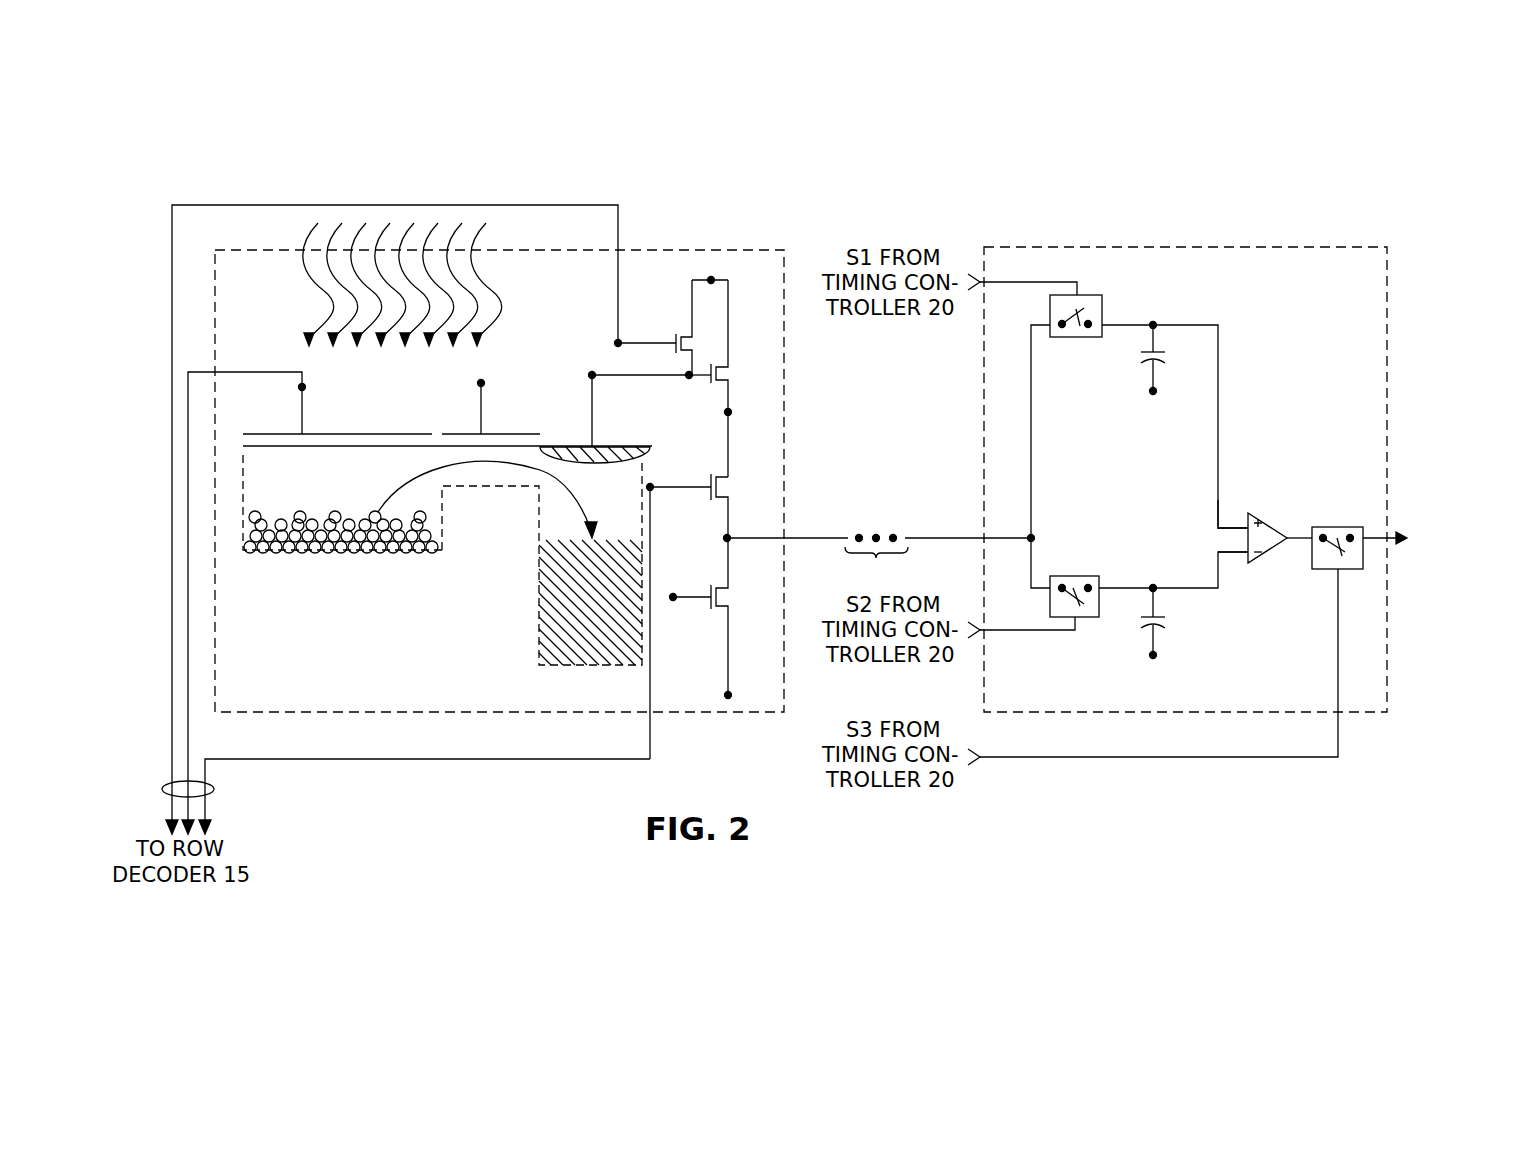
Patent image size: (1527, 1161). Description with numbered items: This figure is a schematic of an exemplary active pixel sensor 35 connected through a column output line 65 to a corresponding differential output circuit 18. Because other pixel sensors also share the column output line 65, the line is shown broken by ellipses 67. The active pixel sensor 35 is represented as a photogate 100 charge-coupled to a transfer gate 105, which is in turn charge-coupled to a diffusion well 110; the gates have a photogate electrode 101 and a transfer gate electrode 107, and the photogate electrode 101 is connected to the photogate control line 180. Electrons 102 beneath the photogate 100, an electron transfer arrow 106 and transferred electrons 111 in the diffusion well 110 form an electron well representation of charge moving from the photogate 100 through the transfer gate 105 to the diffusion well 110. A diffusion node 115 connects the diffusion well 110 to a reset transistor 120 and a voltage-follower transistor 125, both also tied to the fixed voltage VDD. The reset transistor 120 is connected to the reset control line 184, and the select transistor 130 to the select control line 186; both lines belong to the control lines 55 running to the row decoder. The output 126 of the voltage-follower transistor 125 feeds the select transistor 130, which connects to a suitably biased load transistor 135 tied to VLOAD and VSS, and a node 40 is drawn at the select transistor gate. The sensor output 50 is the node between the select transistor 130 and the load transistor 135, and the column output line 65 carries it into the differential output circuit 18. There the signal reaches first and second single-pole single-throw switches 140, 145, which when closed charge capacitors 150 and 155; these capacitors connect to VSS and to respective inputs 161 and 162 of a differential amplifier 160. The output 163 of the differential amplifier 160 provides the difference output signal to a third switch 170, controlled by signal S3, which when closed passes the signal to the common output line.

The reset control line 184 is at (392, 501).
The active pixel sensor 35 is at (652, 251).
The photogate electrode 101 is at (302, 387).
The photogate control line 180 is at (251, 373).
The photogate 100 is at (350, 428).
The transfer gate electrode 107 is at (478, 384).
The transfer gate 105 is at (514, 412).
The diffusion node 115 is at (590, 377).
The diffusion well 110 is at (610, 450).
The reset transistor 120 is at (670, 340).
The voltage-follower transistor 125 is at (710, 380).
The output of the voltage-follower transistor 126 is at (730, 414).
The electron transfer arrow 106 is at (400, 481).
The row select node 40 is at (648, 487).
The select transistor 130 is at (708, 490).
The active pixel sensor output 50 is at (730, 541).
The transferred electrons 111 is at (550, 542).
The load transistor 135 is at (708, 600).
The electrons 102 is at (369, 565).
The select control line 186 is at (424, 796).
The control lines 55 is at (214, 789).
The column output line 65 is at (942, 537).
The ellipses 67 is at (876, 560).
The differential output circuit 18 is at (1126, 247).
The first single-pole single-throw switch 140 is at (1100, 300).
The first capacitor 150 is at (1152, 377).
The second single-pole single-throw switch 145 is at (1080, 576).
The second capacitor 155 is at (1158, 640).
The differential amplifier 160 is at (1258, 565).
The first input of the differential amplifier 161 is at (1246, 522).
The second input of the differential amplifier 162 is at (1248, 552).
The output of the differential amplifier 163 is at (1292, 542).
The third single-pole single-throw switch 170 is at (1332, 526).